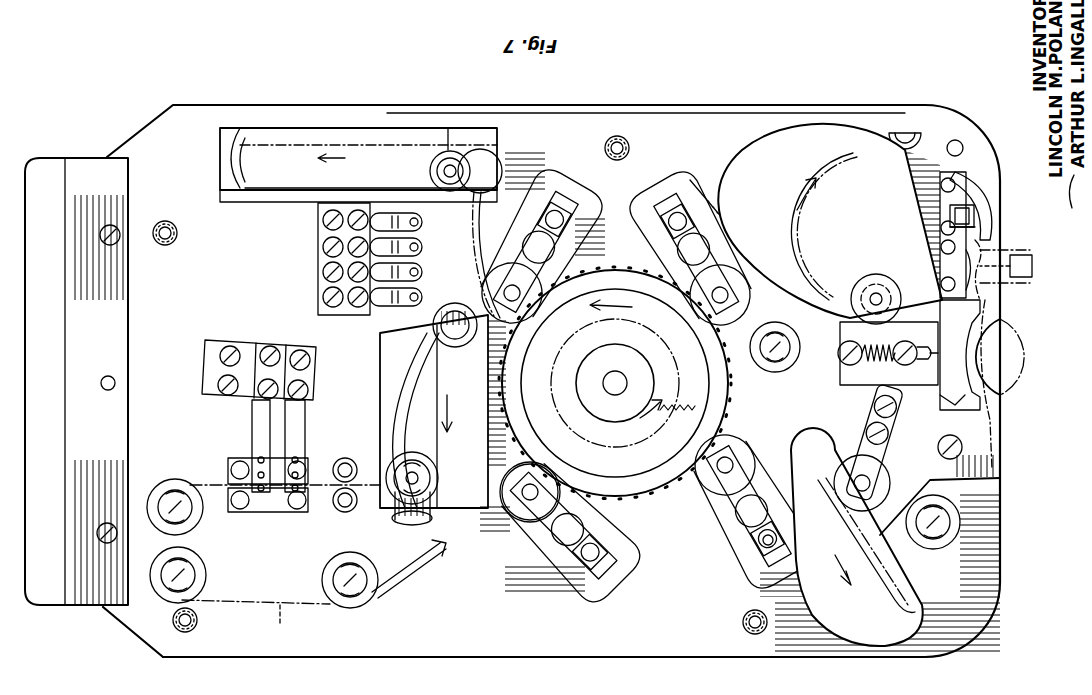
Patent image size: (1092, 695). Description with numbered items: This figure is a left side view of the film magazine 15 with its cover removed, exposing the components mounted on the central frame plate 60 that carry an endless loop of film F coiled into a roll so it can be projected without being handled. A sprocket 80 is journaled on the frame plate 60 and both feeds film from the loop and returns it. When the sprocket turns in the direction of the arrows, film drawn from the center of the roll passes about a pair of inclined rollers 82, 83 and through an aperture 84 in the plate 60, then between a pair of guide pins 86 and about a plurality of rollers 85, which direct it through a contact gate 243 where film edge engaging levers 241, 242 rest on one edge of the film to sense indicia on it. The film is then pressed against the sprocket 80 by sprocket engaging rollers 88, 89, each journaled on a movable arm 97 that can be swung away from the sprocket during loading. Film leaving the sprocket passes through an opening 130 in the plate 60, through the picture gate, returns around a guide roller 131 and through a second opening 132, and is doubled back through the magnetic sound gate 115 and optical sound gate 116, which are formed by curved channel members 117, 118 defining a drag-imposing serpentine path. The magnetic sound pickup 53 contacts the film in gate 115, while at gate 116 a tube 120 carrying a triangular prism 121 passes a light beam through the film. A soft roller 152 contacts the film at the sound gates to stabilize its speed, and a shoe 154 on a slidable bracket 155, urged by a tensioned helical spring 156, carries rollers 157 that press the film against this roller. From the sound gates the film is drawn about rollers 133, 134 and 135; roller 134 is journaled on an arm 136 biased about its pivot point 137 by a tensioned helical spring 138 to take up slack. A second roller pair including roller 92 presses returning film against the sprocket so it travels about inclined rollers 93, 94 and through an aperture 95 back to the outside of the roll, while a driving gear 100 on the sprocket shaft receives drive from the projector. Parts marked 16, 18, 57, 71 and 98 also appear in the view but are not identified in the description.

The magazine 15 is at (155, 665).
The drive wheel 16 is at (702, 318).
The hub 18 is at (615, 395).
The magnetic sound pickup 53 is at (1038, 284).
The screw 57 is at (722, 517).
The central frame plate 60 is at (425, 652).
The guide plate 71 is at (380, 420).
The sprocket 80 is at (656, 492).
The inclined roller 82 is at (462, 348).
The inclined roller 83 is at (440, 474).
The aperture 84 is at (380, 398).
The rollers 85 is at (195, 518).
The guide pins 86 is at (345, 458).
The sprocket engaging roller 88 is at (512, 522).
The sprocket engaging roller 89 is at (708, 489).
The sprocket engaging roller 92 is at (542, 312).
The inclined roller 93 is at (428, 170).
The inclined roller 94 is at (245, 170).
The aperture 95 is at (308, 190).
The movable arm 97 is at (522, 258).
The roller 98 is at (345, 512).
The driving gear 100 is at (697, 410).
The magnetic sound gate 115 is at (952, 272).
The optical sound gate 116 is at (935, 190).
The curved channel member 117 is at (992, 244).
The curved channel member 118 is at (988, 195).
The tube 120 is at (948, 214).
The triangular prism 121 is at (946, 226).
The opening 130 is at (828, 614).
The guide roller 131 is at (862, 282).
The second opening 132 is at (752, 157).
The roller 133 is at (962, 544).
The roller 134 is at (830, 480).
The roller 135 is at (780, 374).
The arm 136 is at (876, 466).
The pivot point 137 is at (870, 432).
The tensioned helical spring 138 is at (938, 448).
The soft roller 152 is at (1030, 395).
The shoe 154 is at (964, 408).
The bracket 155 is at (926, 374).
The tensioned helical spring 156 is at (876, 414).
The rollers 157 is at (976, 314).
The film edge engaging lever 241 is at (252, 432).
The film edge engaging lever 242 is at (298, 432).
The contact gate 243 is at (430, 307).
The film F is at (287, 624).